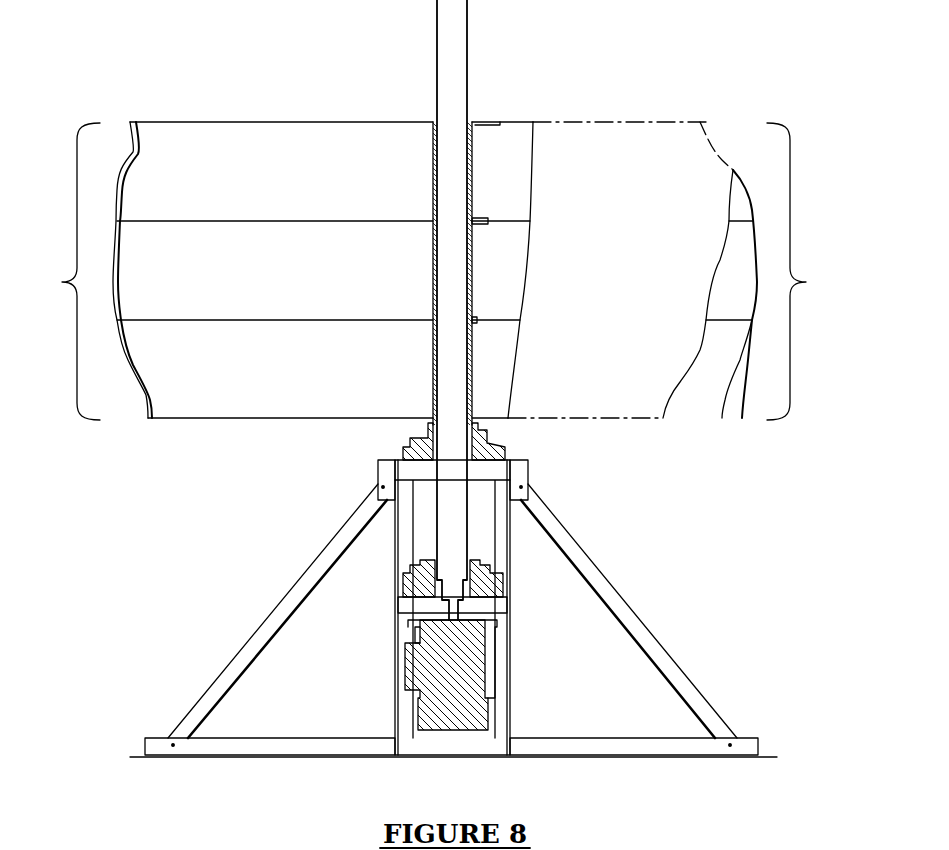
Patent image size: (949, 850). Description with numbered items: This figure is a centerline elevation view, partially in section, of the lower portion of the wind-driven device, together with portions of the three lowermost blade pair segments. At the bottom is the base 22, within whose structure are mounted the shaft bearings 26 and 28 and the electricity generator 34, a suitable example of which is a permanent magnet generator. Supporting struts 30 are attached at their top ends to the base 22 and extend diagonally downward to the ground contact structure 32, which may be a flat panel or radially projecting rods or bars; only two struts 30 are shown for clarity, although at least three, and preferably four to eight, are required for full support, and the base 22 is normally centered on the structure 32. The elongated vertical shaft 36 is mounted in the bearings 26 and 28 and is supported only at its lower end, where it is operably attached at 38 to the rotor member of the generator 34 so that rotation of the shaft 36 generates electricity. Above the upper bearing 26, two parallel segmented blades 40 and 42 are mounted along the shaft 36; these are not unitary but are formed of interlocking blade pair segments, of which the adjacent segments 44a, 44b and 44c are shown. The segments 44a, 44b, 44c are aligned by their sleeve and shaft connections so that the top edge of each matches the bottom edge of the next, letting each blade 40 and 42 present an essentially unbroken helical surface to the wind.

The base 22 is at (510, 662).
The shaft bearing 26 is at (488, 442).
The shaft bearing 28 is at (393, 578).
The supporting struts 30 is at (298, 574).
The ground contact structure 32 is at (292, 757).
The electricity generator 34 is at (475, 709).
The elongated vertical shaft 36 is at (458, 70).
The operable attachment 38 is at (450, 613).
The segmented blade 40 is at (228, 271).
The segmented blade 42 is at (658, 271).
The blade pair segment 44a is at (221, 385).
The blade pair segment 44b is at (221, 277).
The blade pair segment 44c is at (221, 177).